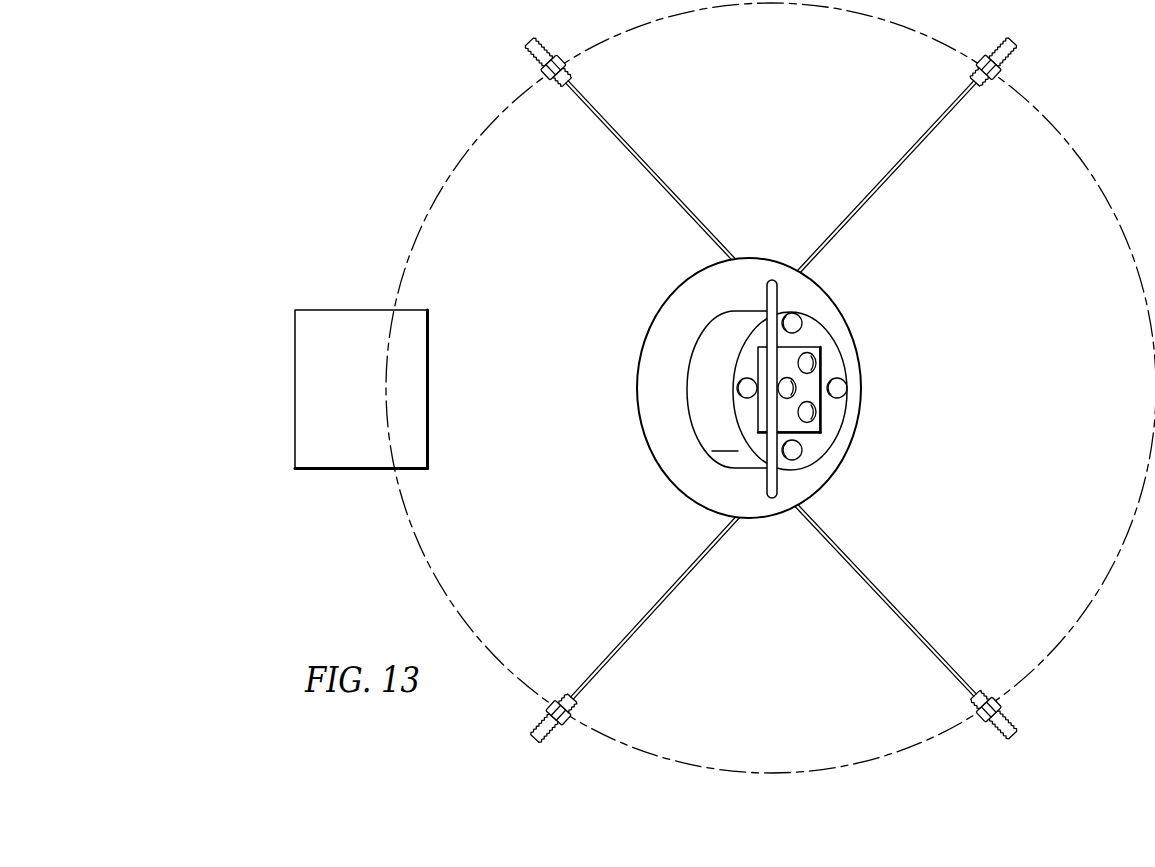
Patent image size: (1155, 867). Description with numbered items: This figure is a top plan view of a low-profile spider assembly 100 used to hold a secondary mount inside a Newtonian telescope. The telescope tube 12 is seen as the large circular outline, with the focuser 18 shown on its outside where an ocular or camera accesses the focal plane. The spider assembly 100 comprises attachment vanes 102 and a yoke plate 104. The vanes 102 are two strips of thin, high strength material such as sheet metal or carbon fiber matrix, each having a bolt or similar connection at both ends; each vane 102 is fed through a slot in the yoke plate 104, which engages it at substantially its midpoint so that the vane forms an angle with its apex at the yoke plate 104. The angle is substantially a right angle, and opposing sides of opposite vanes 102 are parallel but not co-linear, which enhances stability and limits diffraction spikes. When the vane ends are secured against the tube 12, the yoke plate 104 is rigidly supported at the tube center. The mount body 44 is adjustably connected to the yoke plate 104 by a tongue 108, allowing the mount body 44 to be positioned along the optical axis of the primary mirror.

The telescope tube 12 is at (1070, 145).
The focuser 18 is at (295, 384).
The mount body 44 is at (832, 360).
The spider assembly 100 is at (770, 390).
The attachment vanes 102 is at (916, 153).
The yoke plate 104 is at (766, 280).
The tongue 108 is at (792, 418).